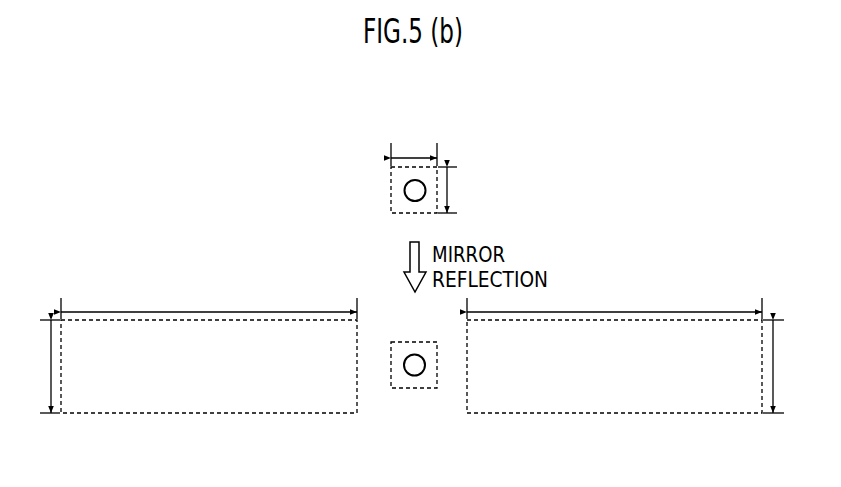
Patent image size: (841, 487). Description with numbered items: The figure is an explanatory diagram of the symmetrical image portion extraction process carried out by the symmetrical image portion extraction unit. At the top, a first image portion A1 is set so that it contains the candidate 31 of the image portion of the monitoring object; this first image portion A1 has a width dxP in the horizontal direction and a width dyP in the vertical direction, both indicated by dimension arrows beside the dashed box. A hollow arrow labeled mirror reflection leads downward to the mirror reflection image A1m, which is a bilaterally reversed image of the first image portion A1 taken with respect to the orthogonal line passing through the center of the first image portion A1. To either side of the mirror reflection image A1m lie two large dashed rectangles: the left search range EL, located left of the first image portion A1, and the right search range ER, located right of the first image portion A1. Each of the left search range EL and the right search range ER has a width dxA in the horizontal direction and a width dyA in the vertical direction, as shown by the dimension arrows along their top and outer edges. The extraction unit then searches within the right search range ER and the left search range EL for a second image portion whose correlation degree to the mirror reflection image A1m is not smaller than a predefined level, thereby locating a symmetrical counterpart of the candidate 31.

The candidate of the image portion of the monitoring object 31 is at (405, 189).
The first image portion A1 is at (390, 208).
The mirror reflection image A1m is at (414, 389).
The left search range EL is at (206, 415).
The right search range ER is at (617, 415).
The width in the horizontal direction of the first image portion dxP is at (414, 149).
The width in the vertical direction of the first image portion dyP is at (460, 190).
The width in the horizontal direction of the search range dxA is at (411, 300).
The width in the vertical direction of the search range dyA is at (411, 366).